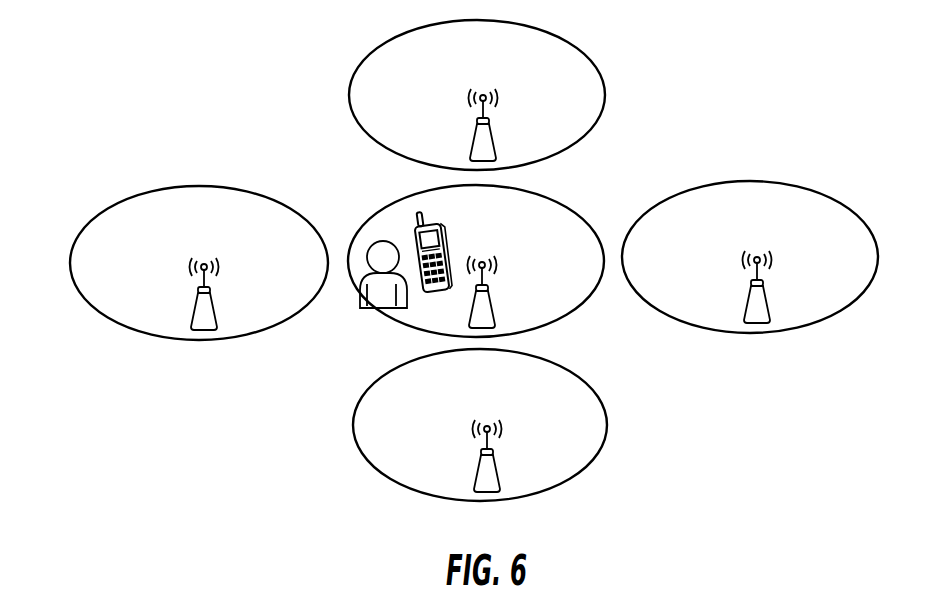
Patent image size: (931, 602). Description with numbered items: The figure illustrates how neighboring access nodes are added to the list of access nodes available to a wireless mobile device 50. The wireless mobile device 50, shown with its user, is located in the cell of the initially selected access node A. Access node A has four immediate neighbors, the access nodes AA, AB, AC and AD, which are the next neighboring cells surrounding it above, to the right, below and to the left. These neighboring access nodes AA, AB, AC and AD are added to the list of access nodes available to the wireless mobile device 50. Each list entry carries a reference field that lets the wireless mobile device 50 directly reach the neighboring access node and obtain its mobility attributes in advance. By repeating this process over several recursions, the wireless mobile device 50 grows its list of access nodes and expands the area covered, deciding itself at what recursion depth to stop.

The wireless mobile device 50 is at (400, 223).
The access node A is at (476, 261).
The neighboring access node AA is at (499, 95).
The neighboring access node AB is at (764, 257).
The neighboring access node AC is at (494, 425).
The neighboring access node AD is at (176, 263).